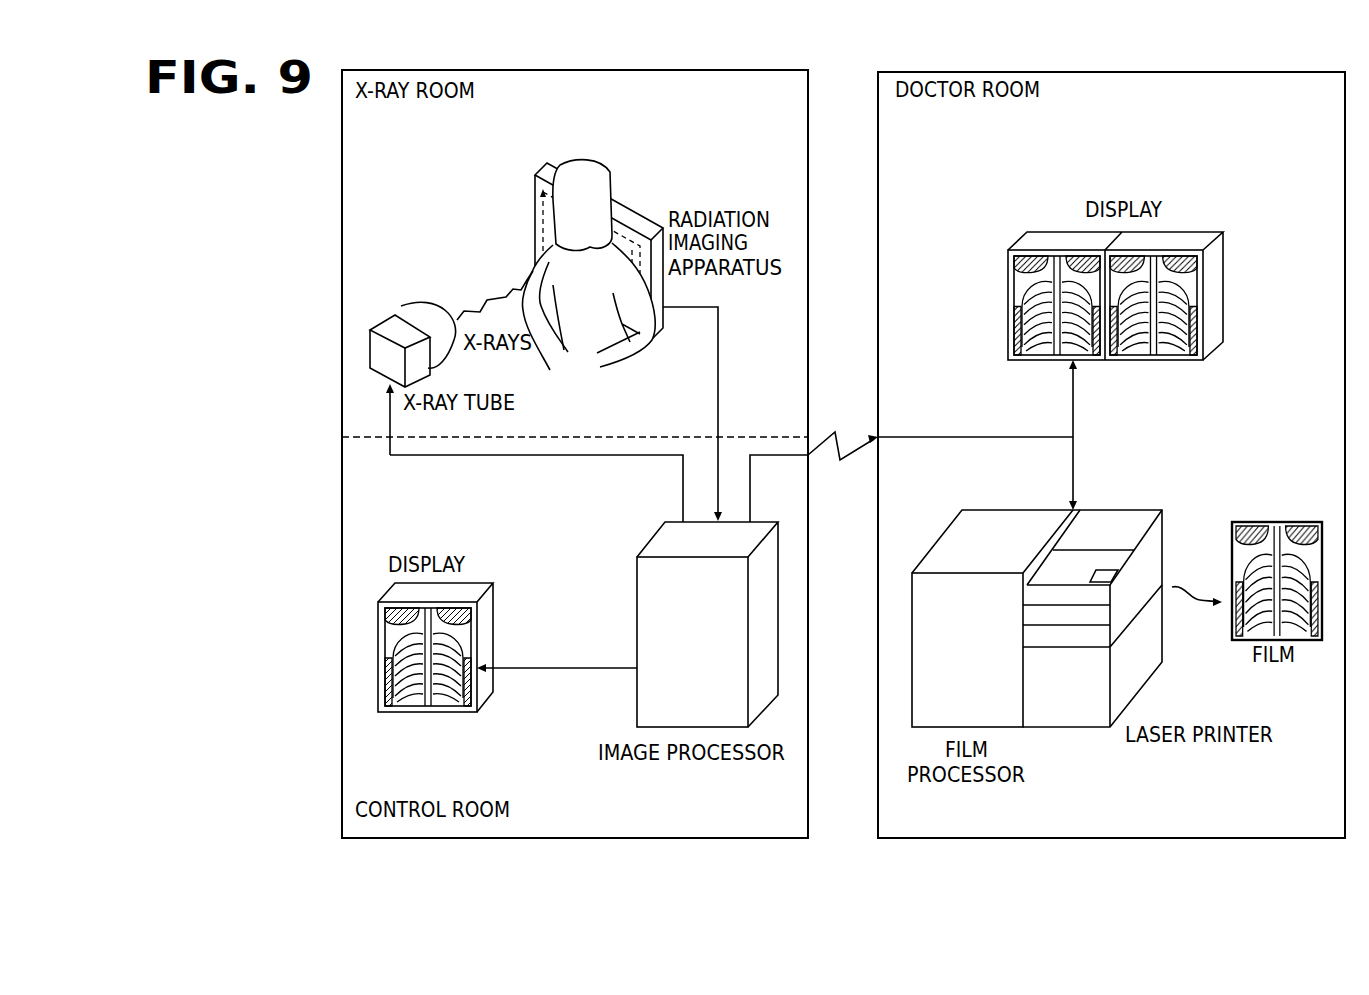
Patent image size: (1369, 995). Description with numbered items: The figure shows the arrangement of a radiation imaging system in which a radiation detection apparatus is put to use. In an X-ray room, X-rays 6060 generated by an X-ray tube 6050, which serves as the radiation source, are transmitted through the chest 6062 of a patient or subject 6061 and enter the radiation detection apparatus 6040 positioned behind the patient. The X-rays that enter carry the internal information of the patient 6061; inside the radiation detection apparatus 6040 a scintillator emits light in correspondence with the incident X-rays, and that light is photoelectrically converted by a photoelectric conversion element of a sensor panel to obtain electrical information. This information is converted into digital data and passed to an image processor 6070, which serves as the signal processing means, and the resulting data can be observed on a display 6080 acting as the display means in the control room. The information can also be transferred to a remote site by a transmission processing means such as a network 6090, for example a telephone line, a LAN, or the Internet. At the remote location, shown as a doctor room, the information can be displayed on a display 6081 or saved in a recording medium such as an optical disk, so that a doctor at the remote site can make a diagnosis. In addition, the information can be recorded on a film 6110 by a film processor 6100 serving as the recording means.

The radiation detection apparatus 6040 is at (628, 232).
The X-ray tube 6050 is at (381, 316).
The X-rays 6060 is at (485, 300).
The patient 6061 is at (583, 165).
The chest 6062 is at (585, 325).
The image processor 6070 is at (637, 696).
The display 6080 is at (494, 617).
The display 6081 is at (1040, 237).
The network 6090 is at (840, 433).
The film processor 6100 is at (1003, 510).
The film 6110 is at (1277, 522).